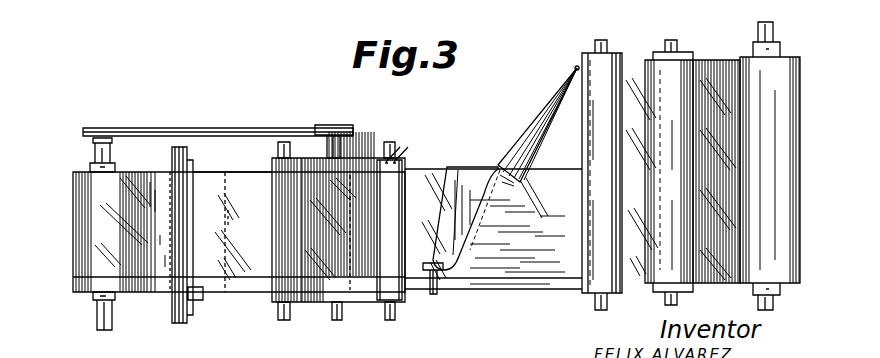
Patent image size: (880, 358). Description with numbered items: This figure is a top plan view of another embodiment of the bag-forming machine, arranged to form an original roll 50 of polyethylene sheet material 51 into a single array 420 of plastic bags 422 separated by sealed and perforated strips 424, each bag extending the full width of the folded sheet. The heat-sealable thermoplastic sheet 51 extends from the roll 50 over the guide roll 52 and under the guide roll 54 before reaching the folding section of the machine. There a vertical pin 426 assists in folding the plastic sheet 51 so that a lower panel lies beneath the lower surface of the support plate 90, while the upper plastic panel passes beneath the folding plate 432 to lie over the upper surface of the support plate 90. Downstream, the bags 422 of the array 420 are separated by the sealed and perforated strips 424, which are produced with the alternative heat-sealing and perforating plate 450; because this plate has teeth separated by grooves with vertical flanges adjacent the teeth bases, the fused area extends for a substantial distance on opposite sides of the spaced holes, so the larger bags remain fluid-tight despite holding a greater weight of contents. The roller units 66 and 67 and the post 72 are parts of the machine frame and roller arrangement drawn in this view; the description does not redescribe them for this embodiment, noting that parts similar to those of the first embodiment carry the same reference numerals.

The single array of plastic bags 420 is at (163, 308).
The support post 72 is at (168, 231).
The plastic bags 422 is at (253, 152).
The sealed and perforated strips 424 is at (230, 222).
The roller assembly 67 is at (363, 148).
The roller 66 is at (409, 226).
The heat-sealing and perforating plate 450 is at (375, 238).
The support plate 90 is at (545, 281).
The folding plate 432 is at (483, 135).
The vertical pin 426 is at (575, 66).
The guide roll 54 is at (625, 56).
The guide roll 52 is at (698, 30).
The polyethylene sheet 51 is at (725, 60).
The roll 50 is at (808, 44).